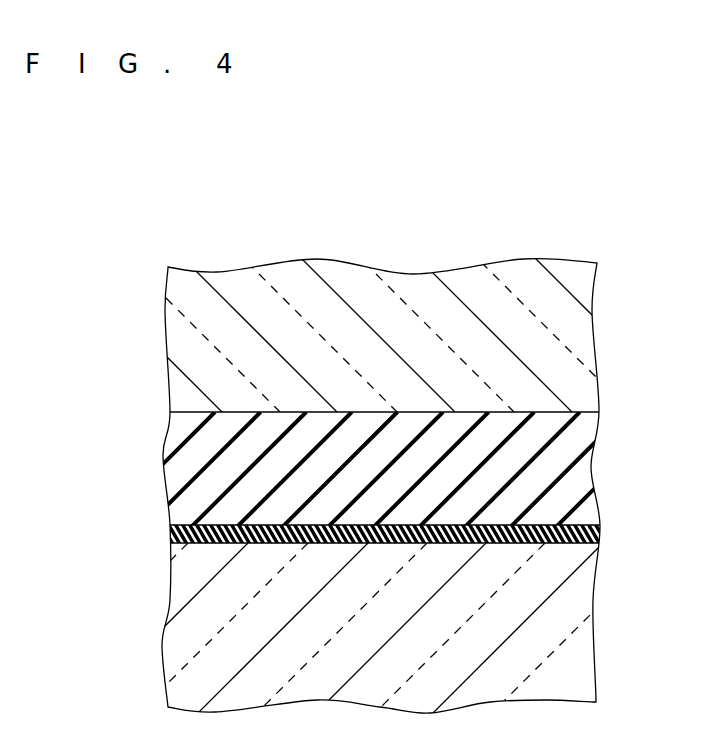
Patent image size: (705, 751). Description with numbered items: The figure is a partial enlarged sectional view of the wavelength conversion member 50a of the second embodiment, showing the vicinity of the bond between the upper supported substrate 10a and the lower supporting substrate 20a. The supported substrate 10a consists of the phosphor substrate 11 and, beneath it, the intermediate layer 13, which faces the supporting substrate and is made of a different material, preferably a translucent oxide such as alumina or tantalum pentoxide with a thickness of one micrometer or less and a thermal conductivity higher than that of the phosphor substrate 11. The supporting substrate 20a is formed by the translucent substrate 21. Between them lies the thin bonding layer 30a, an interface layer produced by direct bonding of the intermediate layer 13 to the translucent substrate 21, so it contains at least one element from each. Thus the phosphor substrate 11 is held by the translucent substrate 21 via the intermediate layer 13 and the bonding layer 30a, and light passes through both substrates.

The wavelength conversion member 50a is at (170, 211).
The supported substrate 10a is at (610, 263).
The phosphor substrate 11 is at (185, 344).
The intermediate layer 13 is at (187, 465).
The bonding layer 30a is at (600, 534).
The supporting substrate 20a is at (612, 540).
The translucent substrate 21 is at (185, 628).